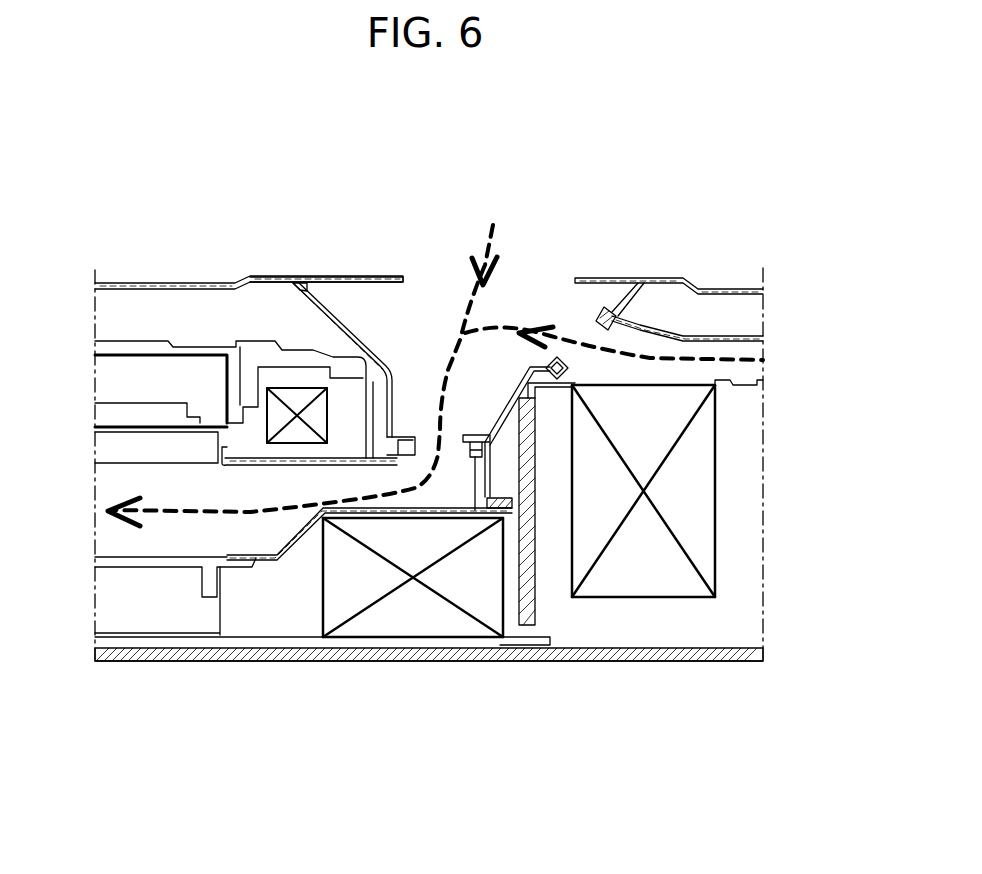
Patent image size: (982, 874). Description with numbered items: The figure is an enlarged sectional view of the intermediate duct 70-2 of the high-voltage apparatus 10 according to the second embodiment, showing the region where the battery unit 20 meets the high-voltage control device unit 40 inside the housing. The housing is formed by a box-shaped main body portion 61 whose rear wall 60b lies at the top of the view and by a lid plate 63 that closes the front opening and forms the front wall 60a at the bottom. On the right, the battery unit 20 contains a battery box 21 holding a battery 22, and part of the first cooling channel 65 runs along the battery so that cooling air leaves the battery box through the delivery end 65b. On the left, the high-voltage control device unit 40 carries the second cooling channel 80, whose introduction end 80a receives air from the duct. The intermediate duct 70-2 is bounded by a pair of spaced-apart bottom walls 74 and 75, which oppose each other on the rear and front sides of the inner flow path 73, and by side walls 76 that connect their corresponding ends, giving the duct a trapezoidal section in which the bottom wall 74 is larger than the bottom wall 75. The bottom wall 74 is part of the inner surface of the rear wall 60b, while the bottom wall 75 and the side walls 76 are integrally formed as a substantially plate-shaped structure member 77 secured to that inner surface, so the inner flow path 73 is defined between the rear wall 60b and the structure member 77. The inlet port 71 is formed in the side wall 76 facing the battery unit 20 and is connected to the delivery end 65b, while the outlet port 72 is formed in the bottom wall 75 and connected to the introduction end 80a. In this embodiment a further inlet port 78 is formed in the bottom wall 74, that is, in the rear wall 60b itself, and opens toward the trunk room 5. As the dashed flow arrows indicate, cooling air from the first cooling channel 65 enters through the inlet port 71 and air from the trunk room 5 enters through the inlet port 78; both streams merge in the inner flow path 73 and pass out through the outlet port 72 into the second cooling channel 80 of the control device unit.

The trunk room 5 is at (440, 114).
The high-voltage apparatus 10 is at (241, 195).
The battery unit 20 is at (646, 636).
The battery box 21 is at (530, 562).
The battery 22 is at (614, 560).
The high-voltage control device unit 40 is at (187, 618).
The front wall 60a is at (690, 664).
The rear wall 60b is at (333, 282).
The main body portion 61 is at (213, 268).
The lid plate 63 is at (745, 674).
The first cooling channel 65 is at (708, 338).
The delivery end 65b is at (641, 327).
The intermediate duct 70-2 is at (500, 288).
The inlet port 71 is at (583, 320).
The outlet port 72 is at (451, 462).
The inner flow path 73 is at (404, 350).
The bottom wall 74 is at (405, 300).
The bottom wall 75 is at (476, 470).
The side wall 76 is at (310, 296).
The structure member 77 is at (515, 431).
The inlet port 78 is at (452, 272).
The second cooling channel 80 is at (269, 536).
The introduction end 80a is at (365, 497).